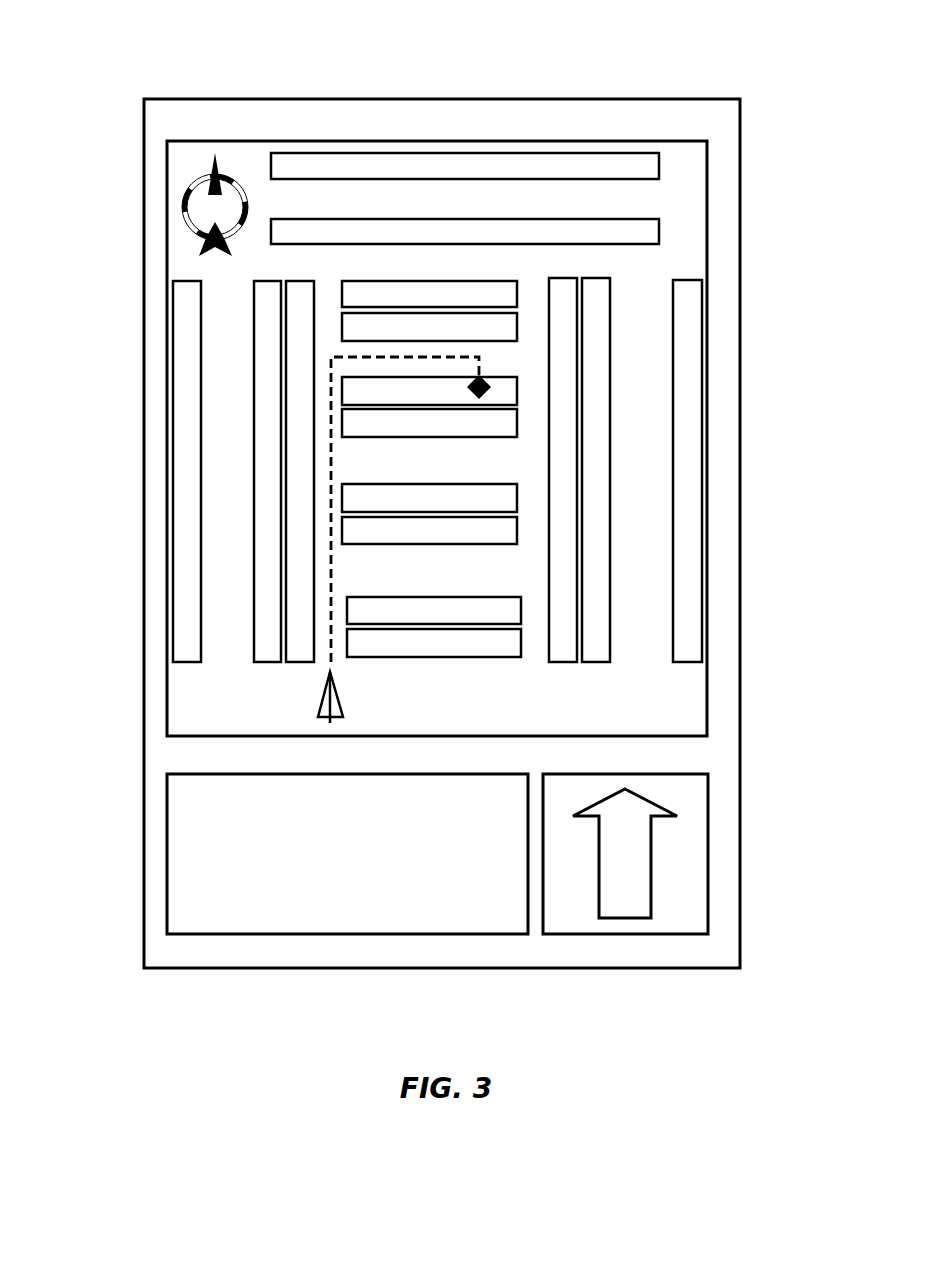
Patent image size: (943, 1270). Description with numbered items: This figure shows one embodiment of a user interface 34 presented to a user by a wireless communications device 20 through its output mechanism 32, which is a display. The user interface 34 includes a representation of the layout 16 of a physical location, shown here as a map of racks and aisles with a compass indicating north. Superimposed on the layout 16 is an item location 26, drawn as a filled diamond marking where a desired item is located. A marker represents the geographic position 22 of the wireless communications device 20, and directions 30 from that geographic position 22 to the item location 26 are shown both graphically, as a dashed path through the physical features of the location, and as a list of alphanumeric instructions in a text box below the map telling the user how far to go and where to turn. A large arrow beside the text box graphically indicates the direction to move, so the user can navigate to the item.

The layout 16 is at (312, 140).
The wireless communications device 20 is at (290, 691).
The geographic position 22 is at (329, 671).
The item location 26 is at (487, 379).
The directions 30 is at (327, 565).
The output mechanism 32 is at (443, 98).
The user interface 34 is at (582, 108).